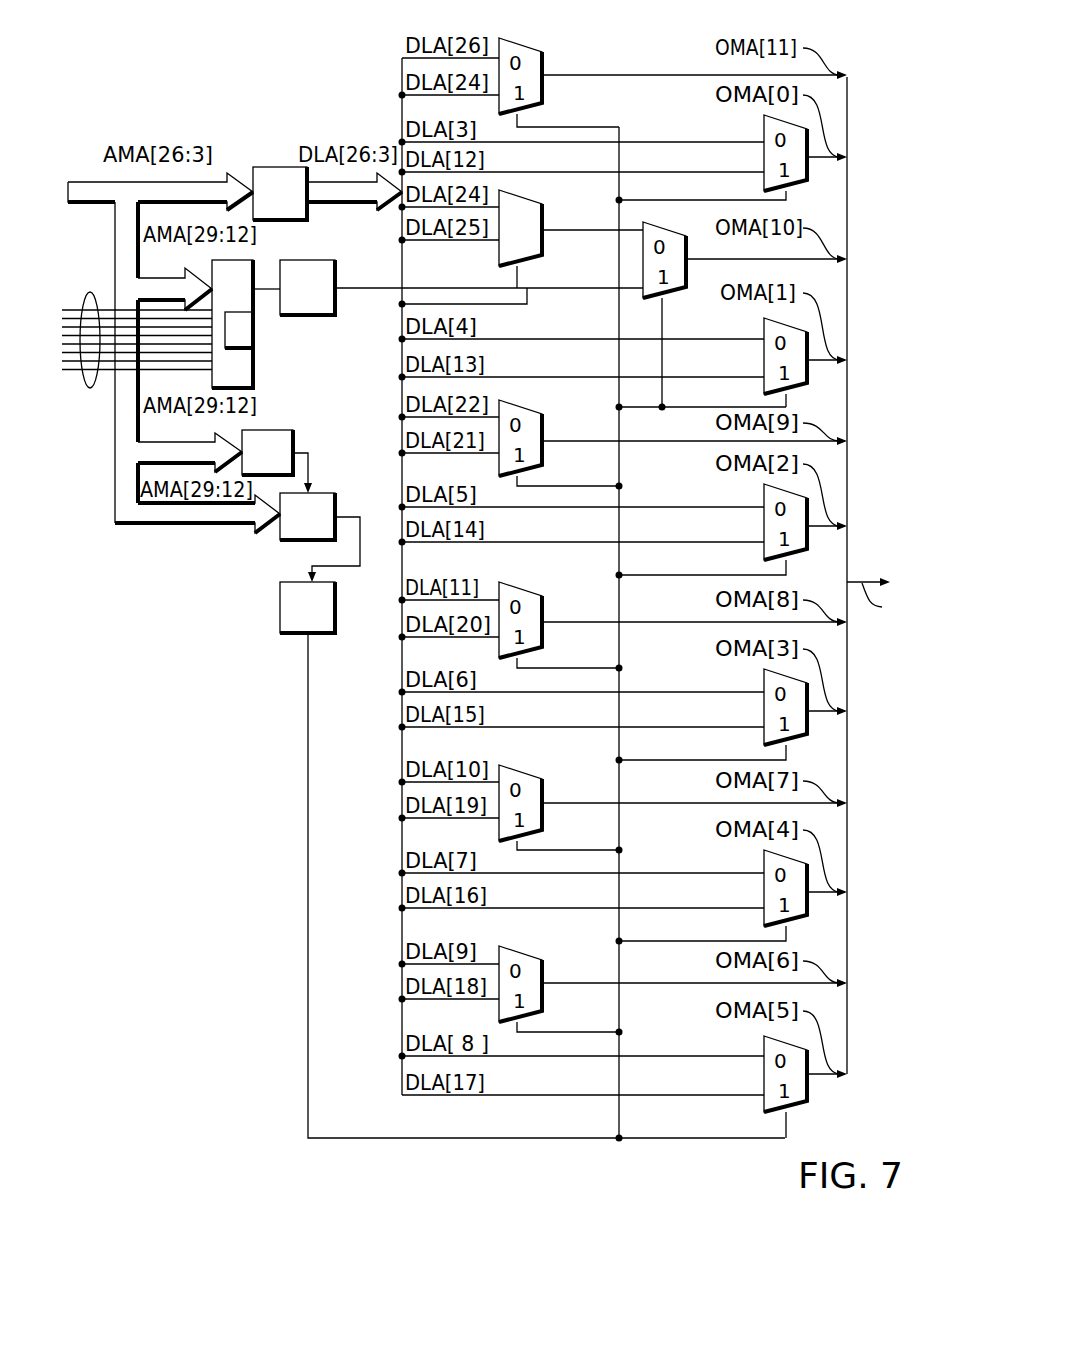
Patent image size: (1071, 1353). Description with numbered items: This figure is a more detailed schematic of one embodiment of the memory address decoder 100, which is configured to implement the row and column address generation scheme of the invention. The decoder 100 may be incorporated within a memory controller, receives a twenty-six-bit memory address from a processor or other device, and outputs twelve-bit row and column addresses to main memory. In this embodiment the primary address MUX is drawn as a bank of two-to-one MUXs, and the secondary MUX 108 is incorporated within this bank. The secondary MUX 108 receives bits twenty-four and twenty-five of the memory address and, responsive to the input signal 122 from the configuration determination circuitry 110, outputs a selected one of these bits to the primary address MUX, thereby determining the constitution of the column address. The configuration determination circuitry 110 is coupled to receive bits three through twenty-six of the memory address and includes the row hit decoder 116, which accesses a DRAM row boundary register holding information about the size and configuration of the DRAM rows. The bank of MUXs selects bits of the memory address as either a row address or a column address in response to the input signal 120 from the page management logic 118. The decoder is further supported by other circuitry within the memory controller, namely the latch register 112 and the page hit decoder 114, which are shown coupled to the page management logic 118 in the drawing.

The memory address decoder 100 is at (866, 71).
The secondary MUX 108 is at (540, 214).
The configuration determination circuitry 110 is at (249, 381).
The latch register 112 is at (284, 465).
The page hit decoder 114 is at (324, 527).
The row hit decoder 116 is at (243, 330).
The page management logic 118 is at (324, 617).
The input signal 120 is at (391, 1142).
The input signal 122 is at (352, 288).